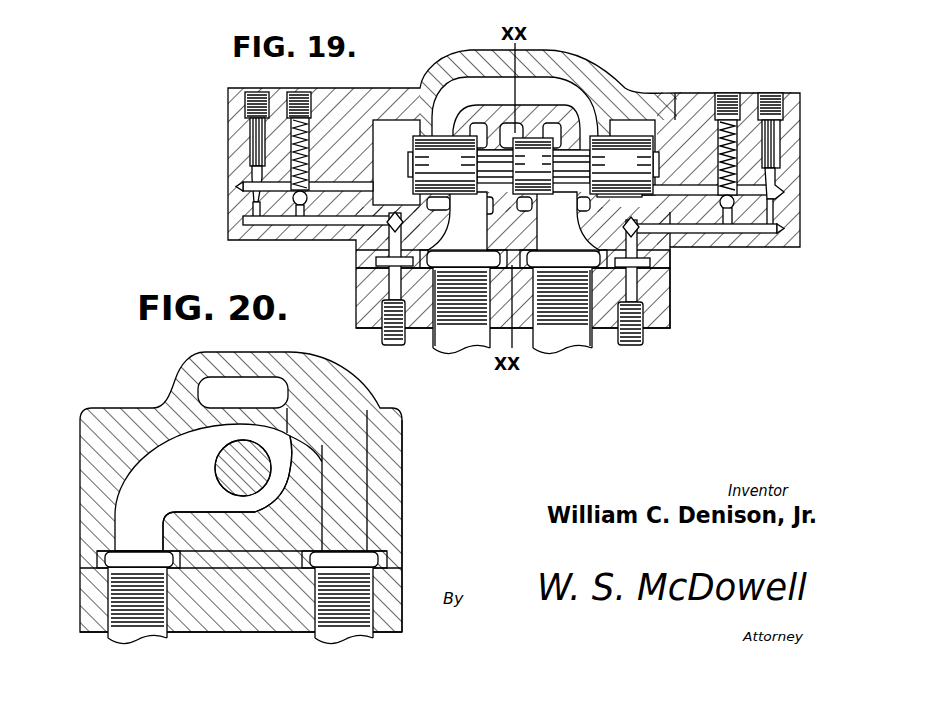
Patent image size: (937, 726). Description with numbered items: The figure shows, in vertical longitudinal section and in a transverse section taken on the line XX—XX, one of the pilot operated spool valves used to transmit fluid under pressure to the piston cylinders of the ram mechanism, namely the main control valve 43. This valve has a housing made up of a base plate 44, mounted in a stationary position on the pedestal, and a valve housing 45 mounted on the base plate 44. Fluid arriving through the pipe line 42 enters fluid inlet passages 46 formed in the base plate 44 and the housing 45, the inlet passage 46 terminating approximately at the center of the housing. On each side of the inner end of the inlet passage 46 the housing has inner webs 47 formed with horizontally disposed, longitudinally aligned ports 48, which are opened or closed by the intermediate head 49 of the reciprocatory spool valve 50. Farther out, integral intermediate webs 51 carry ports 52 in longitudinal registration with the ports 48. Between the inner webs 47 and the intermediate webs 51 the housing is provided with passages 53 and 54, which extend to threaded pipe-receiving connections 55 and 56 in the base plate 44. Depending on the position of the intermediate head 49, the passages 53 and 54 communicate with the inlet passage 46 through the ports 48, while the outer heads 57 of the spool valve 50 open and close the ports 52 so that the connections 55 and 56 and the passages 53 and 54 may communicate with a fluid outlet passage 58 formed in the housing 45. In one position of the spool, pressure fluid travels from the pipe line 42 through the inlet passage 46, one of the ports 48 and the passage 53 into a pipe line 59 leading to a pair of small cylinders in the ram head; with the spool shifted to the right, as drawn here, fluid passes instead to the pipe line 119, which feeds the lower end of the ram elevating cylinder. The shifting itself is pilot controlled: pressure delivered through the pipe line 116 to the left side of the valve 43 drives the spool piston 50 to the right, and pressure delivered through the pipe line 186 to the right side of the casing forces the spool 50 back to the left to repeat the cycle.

In FIG. 20, the pipe line 42 is at (130, 617).
In FIG. 19, the main control valve 43 is at (646, 77).
In FIG. 20, the main control valve 43 is at (160, 388).
In FIG. 19, the base plate 44 is at (670, 287).
In FIG. 20, the base plate 44 is at (396, 605).
In FIG. 19, the valve housing 45 is at (664, 258).
In FIG. 20, the valve housing 45 is at (398, 487).
In FIG. 19, the fluid inlet passage 46 is at (527, 133).
In FIG. 20, the fluid inlet passage 46 is at (72, 569).
In FIG. 19, the inner web 47 is at (452, 133).
In FIG. 19, the port 48 is at (500, 135).
In FIG. 19, the intermediate head 49 is at (533, 166).
In FIG. 20, the intermediate head 49 is at (262, 447).
In FIG. 19, the spool valve 50 is at (420, 153).
In FIG. 20, the spool valve 50 is at (258, 473).
In FIG. 19, the intermediate web 51 is at (433, 130).
In FIG. 19, the port 52 is at (410, 80).
In FIG. 19, the passage 53 is at (568, 222).
In FIG. 19, the passage 54 is at (457, 222).
In FIG. 19, the threaded pipe-receiving connection 55 is at (594, 315).
In FIG. 19, the threaded pipe-receiving connection 56 is at (427, 322).
In FIG. 19, the outer head 57 is at (533, 165).
In FIG. 19, the fluid outlet passage 58 is at (481, 83).
In FIG. 20, the fluid outlet passage 58 is at (347, 427).
In FIG. 19, the pipe line 59 is at (587, 313).
In FIG. 19, the pipe line 116 is at (385, 333).
In FIG. 19, the pipe line 119 is at (452, 343).
In FIG. 19, the pipe line 186 is at (646, 333).